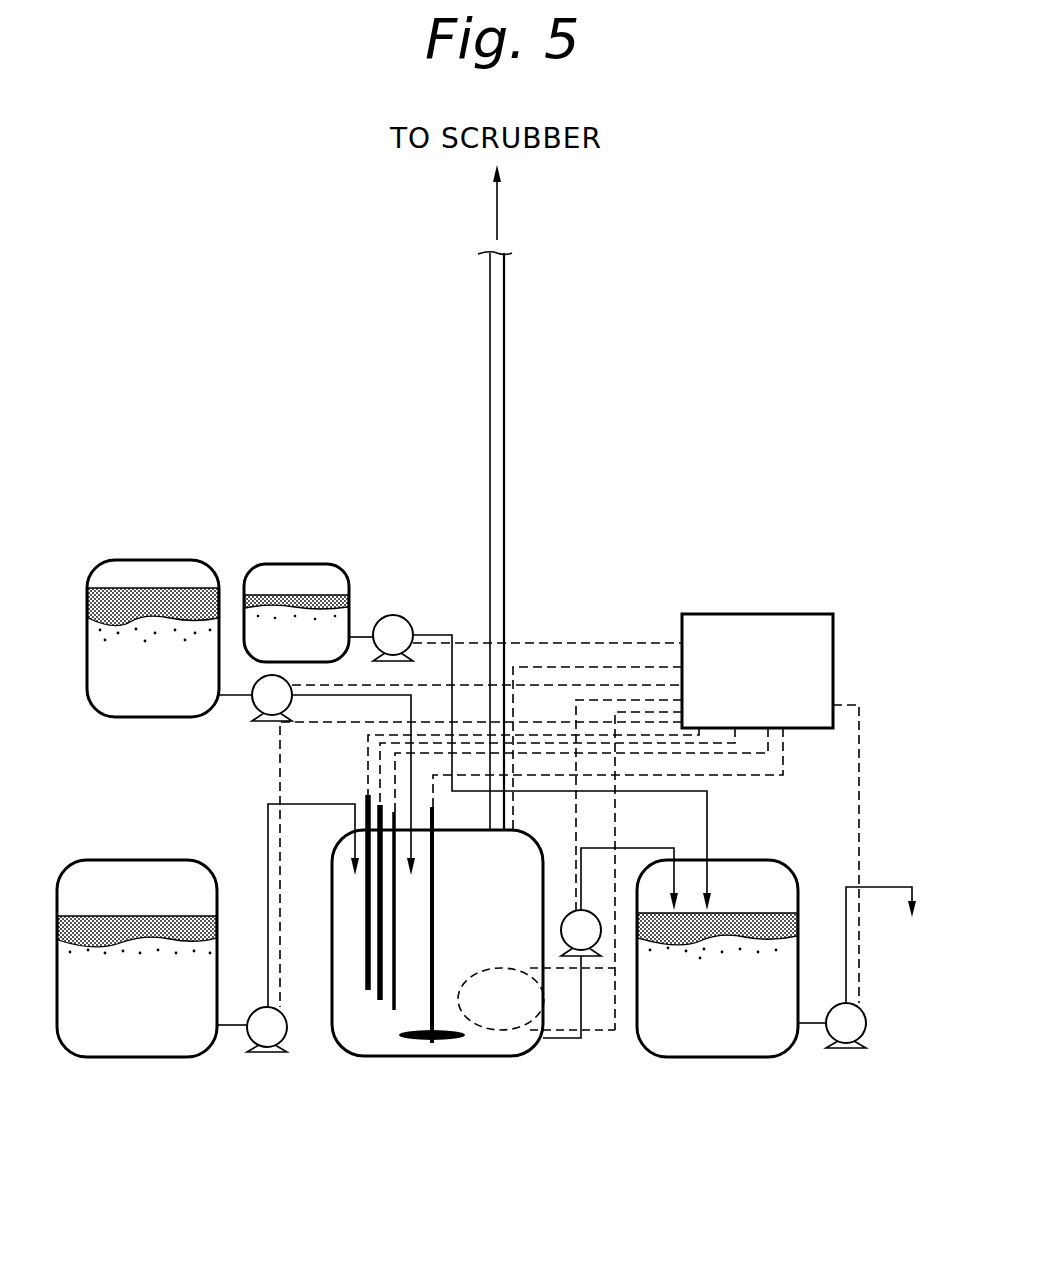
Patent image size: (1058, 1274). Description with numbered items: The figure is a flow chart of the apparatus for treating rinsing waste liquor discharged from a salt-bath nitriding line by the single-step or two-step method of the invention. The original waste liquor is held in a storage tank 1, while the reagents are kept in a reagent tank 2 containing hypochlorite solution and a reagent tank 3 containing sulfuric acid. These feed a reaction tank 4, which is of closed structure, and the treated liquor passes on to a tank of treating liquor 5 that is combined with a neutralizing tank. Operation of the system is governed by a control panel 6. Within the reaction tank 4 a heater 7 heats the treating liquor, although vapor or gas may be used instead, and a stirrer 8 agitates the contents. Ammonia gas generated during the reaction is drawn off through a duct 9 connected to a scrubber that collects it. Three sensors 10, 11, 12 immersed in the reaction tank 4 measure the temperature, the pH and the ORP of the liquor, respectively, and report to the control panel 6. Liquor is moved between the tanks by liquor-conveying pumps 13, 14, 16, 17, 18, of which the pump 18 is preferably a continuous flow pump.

The storage tank 1 is at (104, 1046).
The reagent tank 2 is at (132, 711).
The reagent tank 3 is at (280, 656).
The reaction tank 4 is at (518, 912).
The tank of treating liquor 5 is at (726, 1046).
The control panel 6 is at (768, 680).
The heater 7 is at (536, 999).
The stirrer 8 is at (434, 930).
The duct 9 is at (504, 532).
The sensor 10 is at (368, 990).
The sensor 11 is at (380, 1000).
The sensor 12 is at (394, 1010).
The liquor-conveying pump 13 is at (288, 928).
The liquor-conveying pump 14 is at (530, 762).
The liquor-conveying pump 16 is at (610, 943).
The liquor-conveying pump 17 is at (857, 967).
The liquor-conveying pump 18 is at (317, 775).